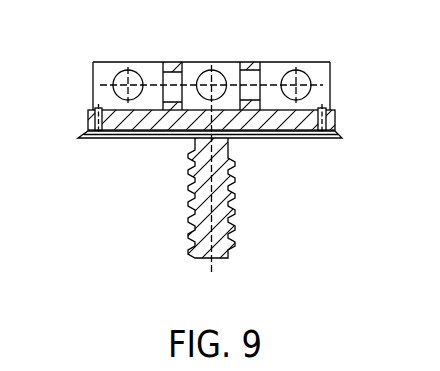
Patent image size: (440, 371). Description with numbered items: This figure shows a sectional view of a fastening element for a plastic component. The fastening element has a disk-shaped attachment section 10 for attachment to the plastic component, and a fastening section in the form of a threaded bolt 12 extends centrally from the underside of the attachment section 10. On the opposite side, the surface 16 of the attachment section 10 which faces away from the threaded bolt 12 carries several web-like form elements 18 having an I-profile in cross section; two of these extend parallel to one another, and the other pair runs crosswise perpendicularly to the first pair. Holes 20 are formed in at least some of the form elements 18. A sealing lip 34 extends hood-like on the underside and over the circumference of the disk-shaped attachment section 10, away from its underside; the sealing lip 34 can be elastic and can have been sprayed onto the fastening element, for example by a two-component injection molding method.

The disk-shaped attachment section 10 is at (86, 118).
The threaded bolt 12 is at (233, 224).
The surface of the attachment section 16 is at (336, 111).
The form elements 18 is at (324, 62).
The holes 20 is at (289, 76).
The sealing lip 34 is at (342, 137).